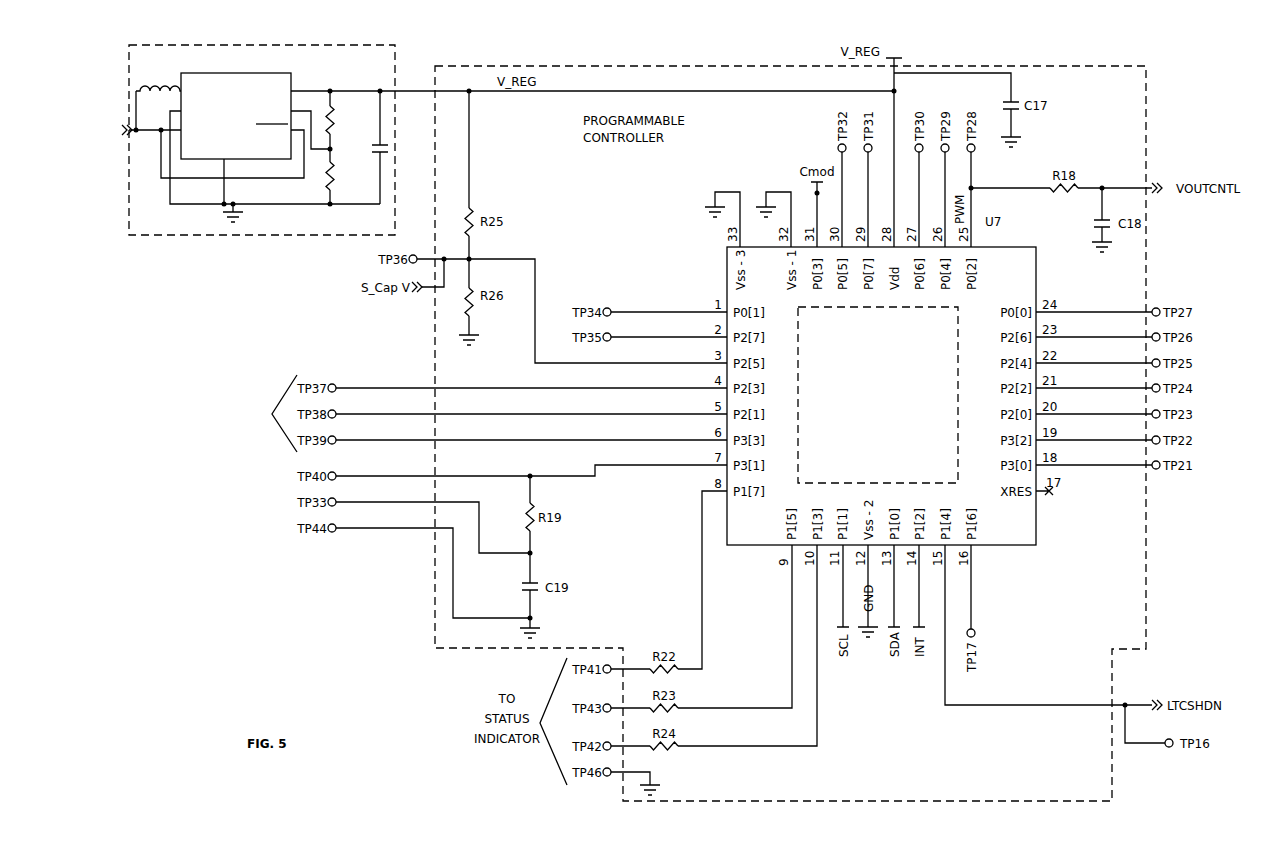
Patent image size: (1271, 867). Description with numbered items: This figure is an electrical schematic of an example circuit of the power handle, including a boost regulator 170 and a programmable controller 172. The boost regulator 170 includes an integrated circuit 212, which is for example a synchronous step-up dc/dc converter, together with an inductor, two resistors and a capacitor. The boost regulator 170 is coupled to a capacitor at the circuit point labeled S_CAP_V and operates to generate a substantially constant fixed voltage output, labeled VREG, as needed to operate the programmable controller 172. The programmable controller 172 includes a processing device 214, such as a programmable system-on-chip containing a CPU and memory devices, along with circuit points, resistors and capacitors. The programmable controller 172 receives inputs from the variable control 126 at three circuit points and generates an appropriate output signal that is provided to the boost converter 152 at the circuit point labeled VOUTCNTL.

The boost regulator 170 is at (231, 174).
The programmable controller 172 is at (565, 66).
The integrated circuit 212 is at (246, 100).
The processing device 214 is at (883, 401).
The variable control 126 is at (221, 463).
The boost converter 152 is at (1194, 166).